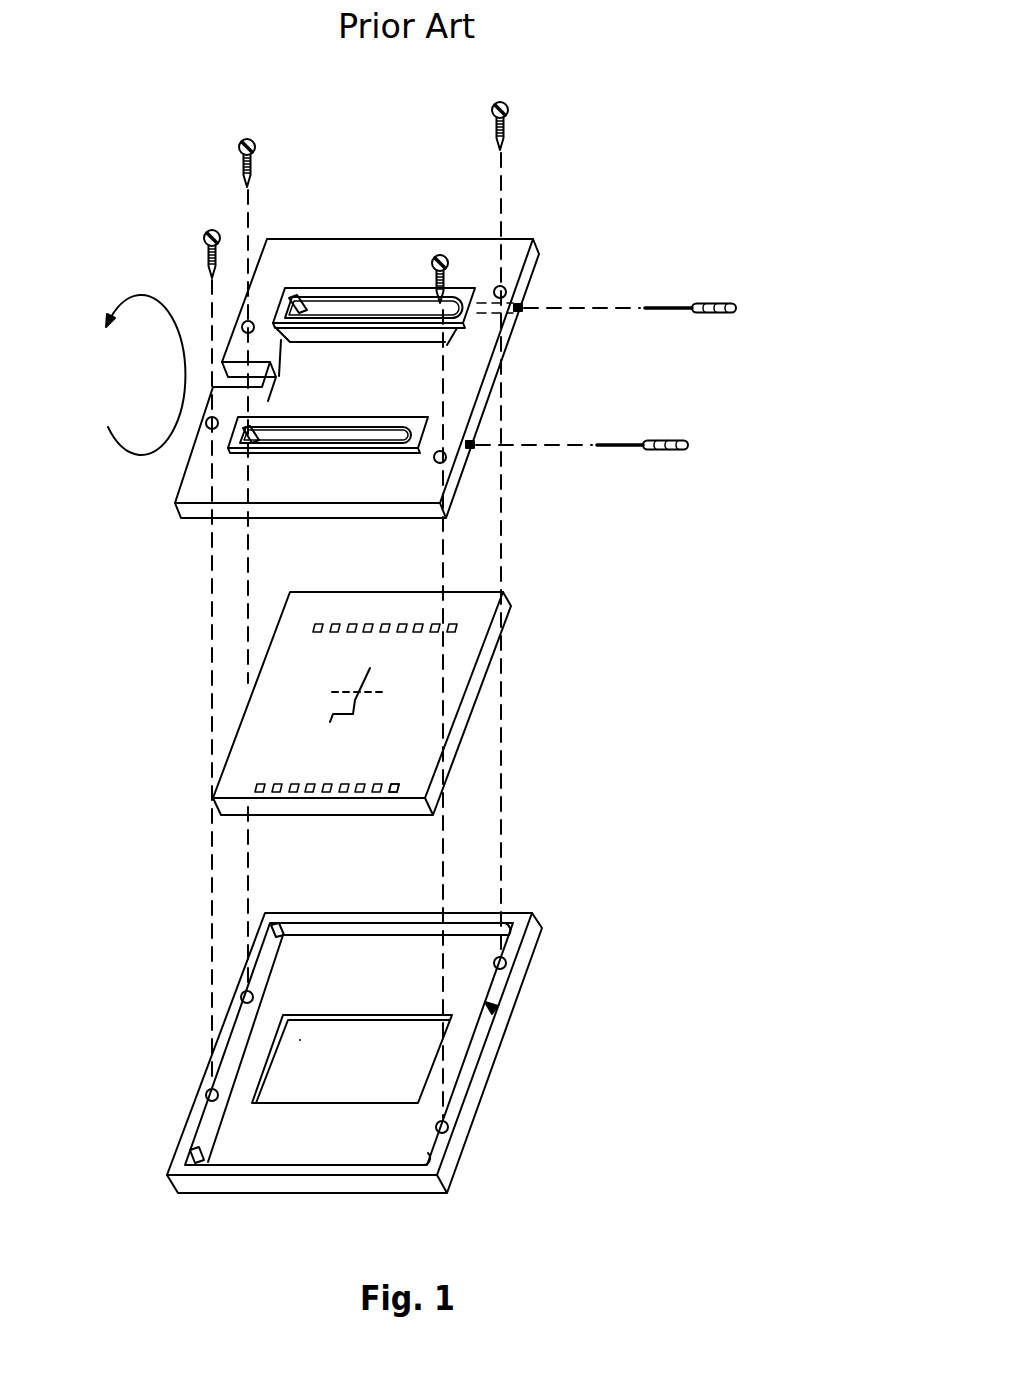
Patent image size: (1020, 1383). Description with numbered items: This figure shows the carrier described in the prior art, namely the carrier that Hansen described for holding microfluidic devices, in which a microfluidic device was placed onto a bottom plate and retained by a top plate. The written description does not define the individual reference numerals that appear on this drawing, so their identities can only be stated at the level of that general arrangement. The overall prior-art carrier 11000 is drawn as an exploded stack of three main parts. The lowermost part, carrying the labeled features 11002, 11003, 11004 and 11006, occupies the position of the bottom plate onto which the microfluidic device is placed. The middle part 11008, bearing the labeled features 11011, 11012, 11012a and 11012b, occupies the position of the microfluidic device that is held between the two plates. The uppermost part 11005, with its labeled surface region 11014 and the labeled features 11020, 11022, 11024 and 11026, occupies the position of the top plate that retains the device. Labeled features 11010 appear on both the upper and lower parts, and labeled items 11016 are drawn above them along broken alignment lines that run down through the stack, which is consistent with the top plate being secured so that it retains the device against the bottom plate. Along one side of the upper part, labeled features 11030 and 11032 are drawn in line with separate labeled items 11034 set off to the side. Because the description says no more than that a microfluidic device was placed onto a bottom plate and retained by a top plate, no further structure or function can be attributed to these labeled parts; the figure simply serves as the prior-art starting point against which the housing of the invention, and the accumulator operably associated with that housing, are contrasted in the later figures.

The prior art sensor module assembly 11000 is at (618, 702).
The base plate 11002 is at (477, 1095).
The raised platform of base plate 11003 is at (385, 1076).
The peripheral rim of base plate 11004 is at (493, 1009).
The cover plate 11005 is at (388, 388).
The recessed floor of base plate 11006 is at (450, 1047).
The circuit board 11008 is at (228, 808).
The mounting holes 11010 is at (240, 327).
The electronic component on circuit board 11011 is at (357, 700).
The connector contact 11012 is at (393, 790).
The lower row of connector contacts 11012a is at (390, 800).
The upper row of connector contacts 11012b is at (462, 620).
The top surface of cover plate 11014 is at (283, 243).
The screws 11016 is at (241, 146).
The first slot opening 11020 is at (313, 292).
The second slot frame 11022 is at (230, 452).
The first slot frame 11024 is at (392, 315).
The second slot opening 11026 is at (300, 443).
The first side pin hole 11030 is at (523, 310).
The second side pin hole 11032 is at (474, 447).
The locking pins 11034 is at (673, 303).